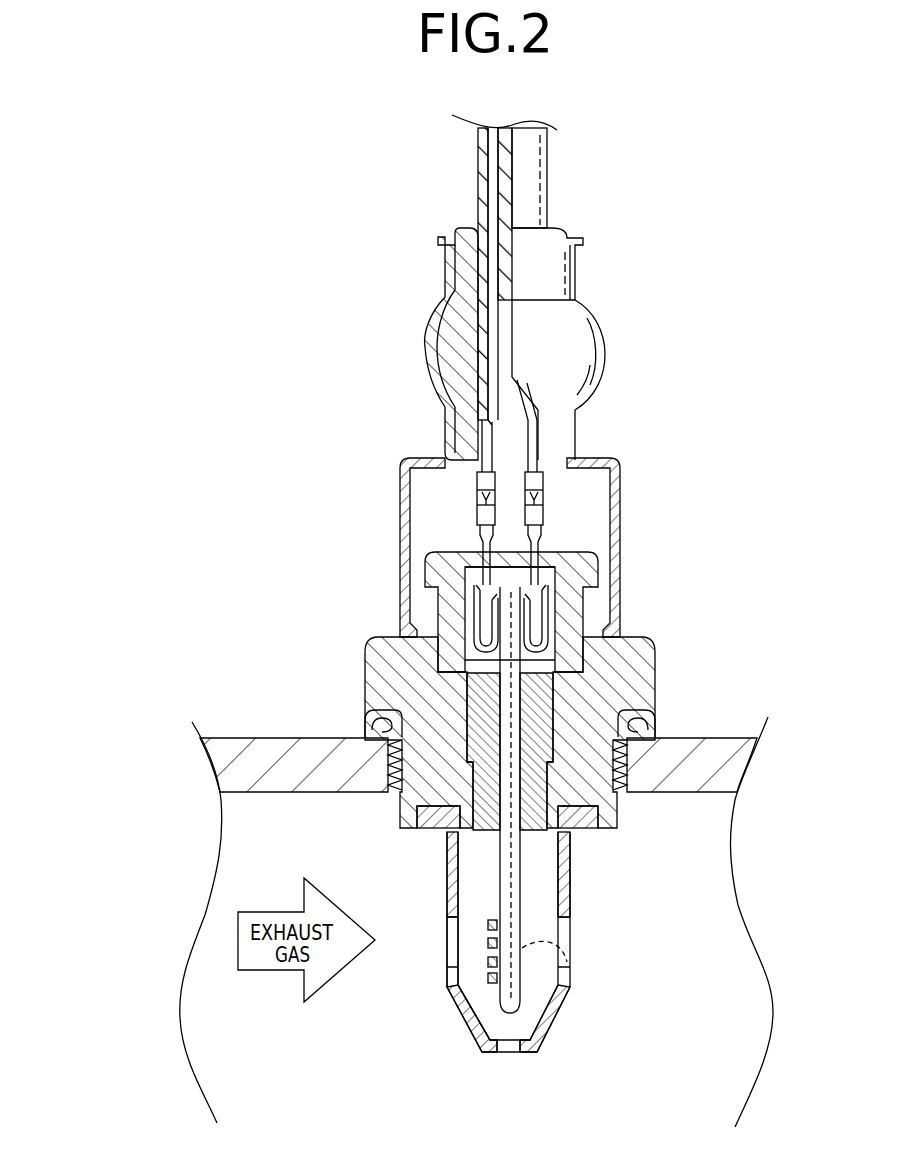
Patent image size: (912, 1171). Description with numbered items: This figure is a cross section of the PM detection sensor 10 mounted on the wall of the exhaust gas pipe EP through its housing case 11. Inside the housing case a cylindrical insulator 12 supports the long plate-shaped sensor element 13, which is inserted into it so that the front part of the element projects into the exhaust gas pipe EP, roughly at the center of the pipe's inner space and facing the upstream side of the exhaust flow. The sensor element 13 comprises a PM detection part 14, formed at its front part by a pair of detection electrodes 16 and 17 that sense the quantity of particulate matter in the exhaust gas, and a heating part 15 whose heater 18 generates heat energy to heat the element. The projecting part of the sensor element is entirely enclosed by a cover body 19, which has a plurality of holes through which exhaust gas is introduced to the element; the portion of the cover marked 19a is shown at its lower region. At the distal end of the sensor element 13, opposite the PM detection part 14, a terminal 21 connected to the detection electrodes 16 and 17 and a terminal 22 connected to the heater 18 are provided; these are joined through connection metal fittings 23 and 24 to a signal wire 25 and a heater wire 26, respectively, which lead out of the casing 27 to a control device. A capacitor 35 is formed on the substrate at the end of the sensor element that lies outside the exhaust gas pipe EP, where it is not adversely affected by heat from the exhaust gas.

The PM detection sensor 10 is at (542, 583).
The housing case 11 is at (382, 648).
The insulator 12 is at (472, 718).
The sensor element 13 is at (520, 968).
The PM detection part 14 is at (468, 1008).
The heating part 15 is at (583, 971).
The detection electrode 16 is at (487, 923).
The detection electrode 17 is at (487, 943).
The heater 18 is at (567, 962).
The cover body 19 is at (568, 895).
The protective cover opening portion 19a is at (450, 952).
The terminal 21 is at (472, 592).
The terminal 22 is at (549, 597).
The connection metal fitting 23 is at (483, 540).
The connection metal fitting 24 is at (538, 540).
The signal wire 25 is at (488, 430).
The heater wire 26 is at (536, 440).
The casing 27 is at (580, 347).
The capacitor 35 is at (482, 653).
The exhaust gas pipe EP is at (258, 742).